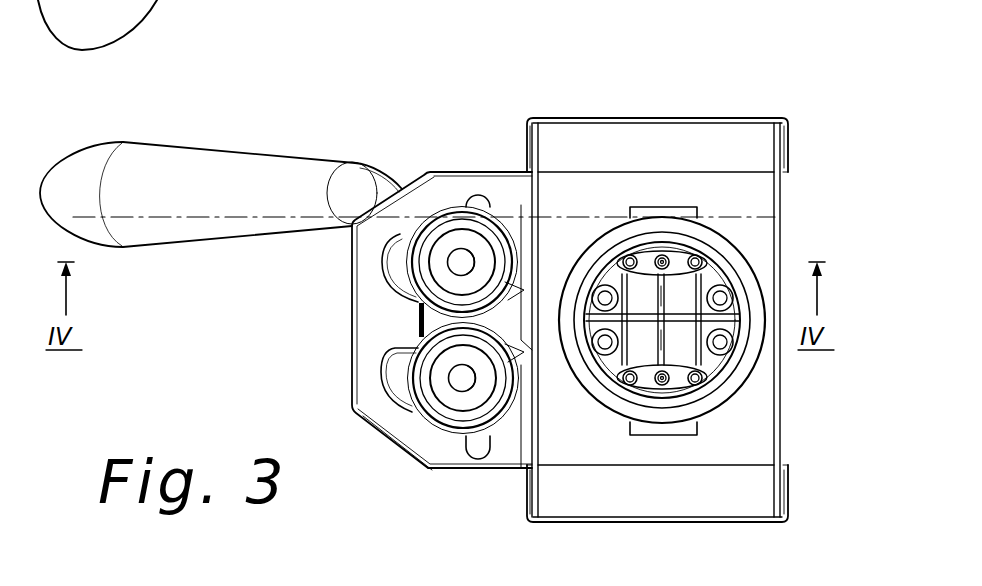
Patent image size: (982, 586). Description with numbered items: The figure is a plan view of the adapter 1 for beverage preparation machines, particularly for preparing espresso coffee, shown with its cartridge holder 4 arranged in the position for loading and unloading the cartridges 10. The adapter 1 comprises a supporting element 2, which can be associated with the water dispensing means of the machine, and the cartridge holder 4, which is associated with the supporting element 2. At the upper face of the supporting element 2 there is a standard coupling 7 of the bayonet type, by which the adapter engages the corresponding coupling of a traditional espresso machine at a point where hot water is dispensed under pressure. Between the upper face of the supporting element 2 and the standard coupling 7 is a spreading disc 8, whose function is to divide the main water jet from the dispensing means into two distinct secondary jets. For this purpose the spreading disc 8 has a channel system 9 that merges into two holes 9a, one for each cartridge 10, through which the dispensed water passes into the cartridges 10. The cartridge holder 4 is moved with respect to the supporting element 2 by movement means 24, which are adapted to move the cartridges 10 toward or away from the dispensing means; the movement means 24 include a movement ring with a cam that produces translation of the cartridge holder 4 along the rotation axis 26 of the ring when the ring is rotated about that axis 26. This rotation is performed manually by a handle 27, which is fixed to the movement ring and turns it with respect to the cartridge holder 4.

The adapter 1 is at (780, 94).
The supporting element 2 is at (717, 104).
The cartridge holder 4 is at (459, 157).
The standard coupling 7 is at (750, 235).
The spreading disc 8 is at (743, 368).
The channel system 9 is at (610, 328).
The holes 9a is at (664, 386).
The cartridge 10 is at (419, 333).
The movement means 24 is at (383, 156).
The rotation axis 26 is at (663, 318).
The handle 27 is at (243, 192).